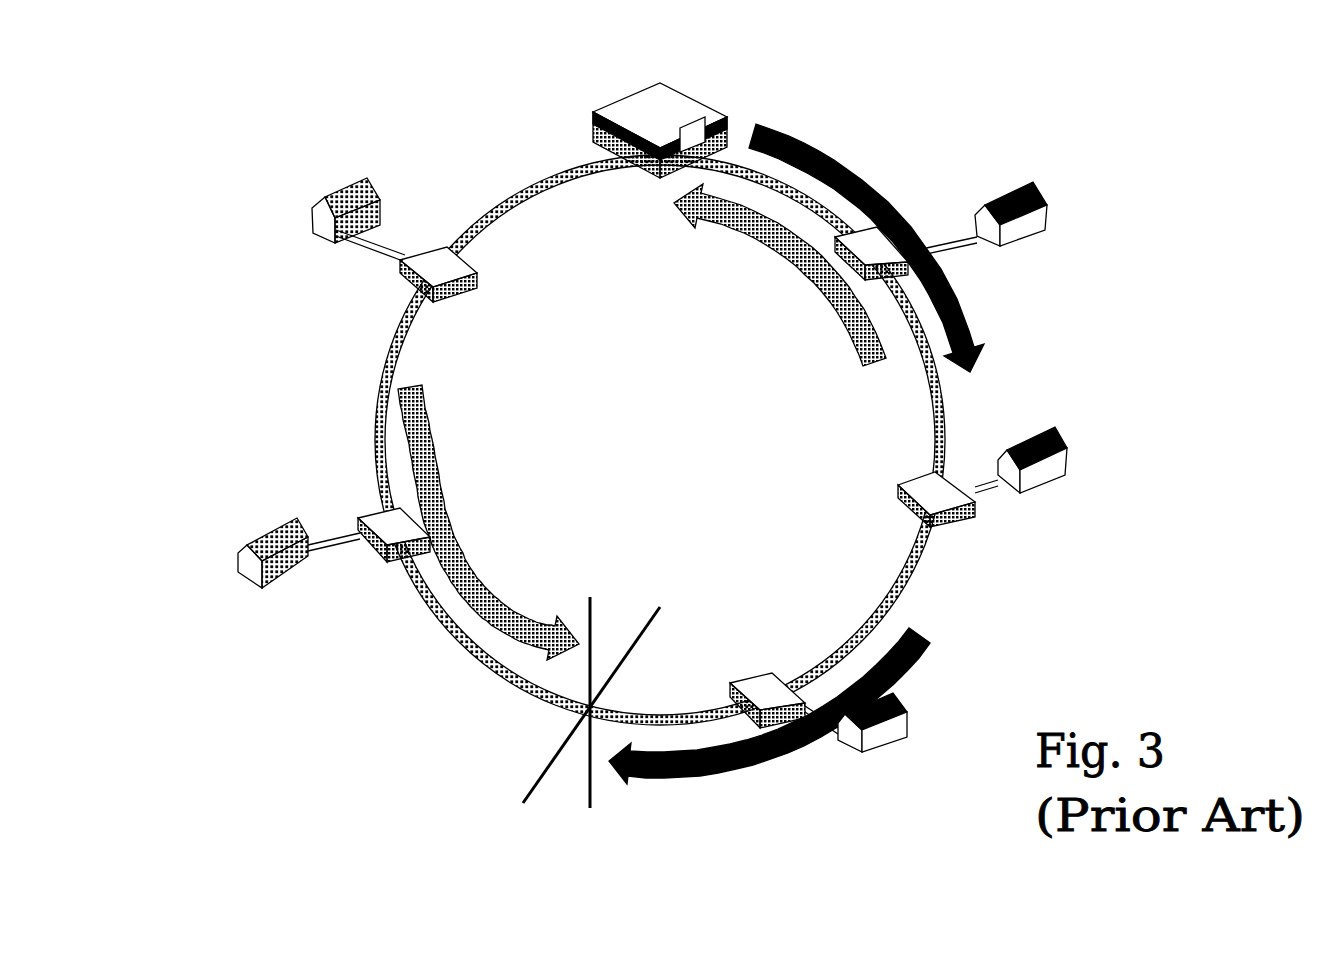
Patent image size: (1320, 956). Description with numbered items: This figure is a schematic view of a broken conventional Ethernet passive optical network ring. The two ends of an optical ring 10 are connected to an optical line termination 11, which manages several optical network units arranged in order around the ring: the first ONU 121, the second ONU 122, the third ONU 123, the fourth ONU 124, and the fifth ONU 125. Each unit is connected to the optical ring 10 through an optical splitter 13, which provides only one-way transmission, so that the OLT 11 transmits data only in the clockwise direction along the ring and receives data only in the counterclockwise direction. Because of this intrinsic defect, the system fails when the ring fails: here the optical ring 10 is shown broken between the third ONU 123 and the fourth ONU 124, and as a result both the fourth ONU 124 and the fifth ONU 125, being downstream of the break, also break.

The optical ring 10 is at (943, 447).
The optical line termination 11 is at (700, 112).
The optical splitter 13 is at (945, 522).
The first ONU 121 is at (1043, 183).
The second ONU 122 is at (1060, 430).
The third ONU 123 is at (885, 747).
The fourth ONU 124 is at (250, 570).
The fifth ONU 125 is at (370, 178).